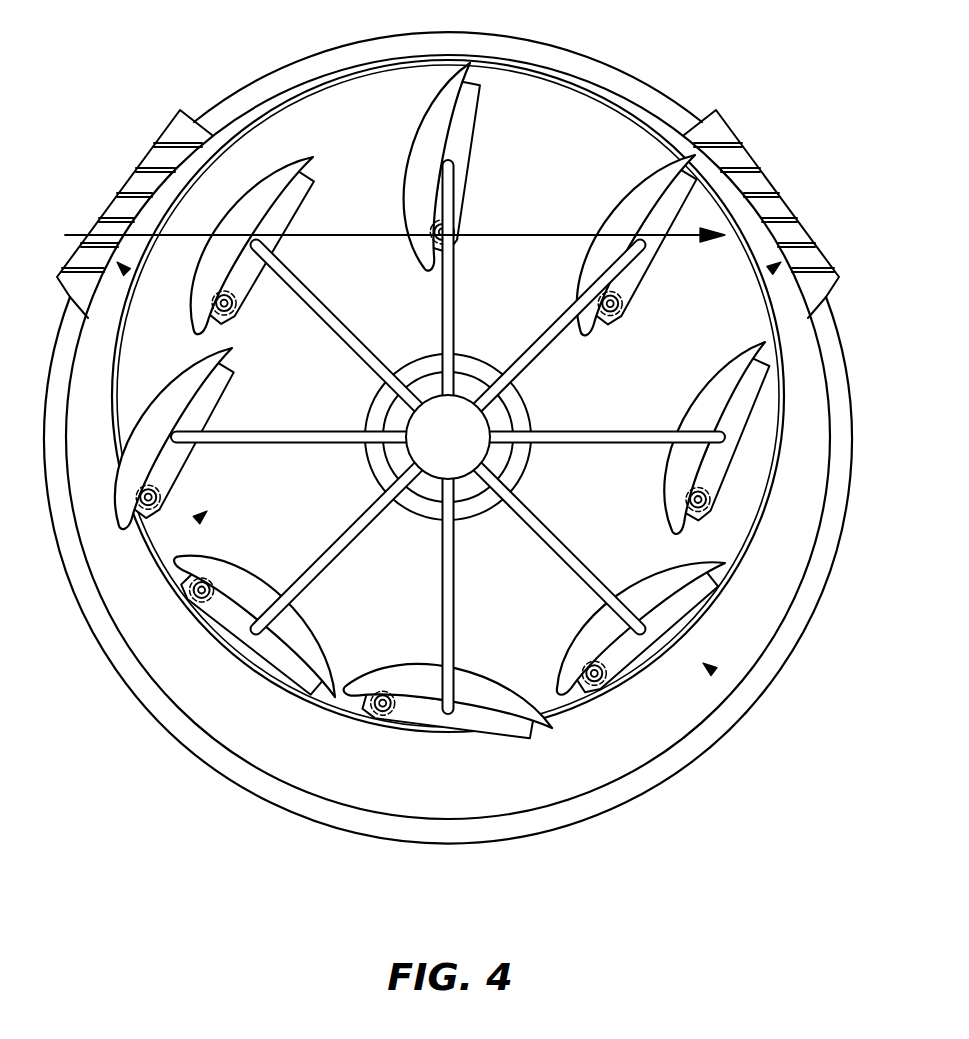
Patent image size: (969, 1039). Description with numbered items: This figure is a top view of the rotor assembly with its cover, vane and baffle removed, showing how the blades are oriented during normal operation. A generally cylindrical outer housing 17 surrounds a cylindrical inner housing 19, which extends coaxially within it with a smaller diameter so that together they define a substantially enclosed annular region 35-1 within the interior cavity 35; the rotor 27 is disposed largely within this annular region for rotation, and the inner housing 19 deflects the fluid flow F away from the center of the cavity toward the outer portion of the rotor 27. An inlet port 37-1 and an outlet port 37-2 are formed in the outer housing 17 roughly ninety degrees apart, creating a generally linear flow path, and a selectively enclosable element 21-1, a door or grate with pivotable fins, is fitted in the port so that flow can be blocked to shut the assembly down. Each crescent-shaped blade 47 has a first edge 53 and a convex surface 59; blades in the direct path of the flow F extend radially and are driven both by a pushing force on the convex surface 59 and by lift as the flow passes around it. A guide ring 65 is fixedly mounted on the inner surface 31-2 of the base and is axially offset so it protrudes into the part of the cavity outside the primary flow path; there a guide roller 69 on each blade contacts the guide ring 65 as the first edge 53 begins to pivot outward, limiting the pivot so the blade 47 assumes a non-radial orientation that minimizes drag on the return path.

The outer housing 17 is at (648, 782).
The inner surface of base 31-2 is at (690, 722).
The guide ring 65 is at (632, 108).
The selectively enclosable element 21-1 is at (181, 108).
The blade 47 is at (420, 132).
The first edge 53 is at (595, 330).
The rotor 27 is at (494, 110).
The convex surface 59 is at (400, 183).
The guide roller 69 is at (622, 310).
The inner housing 19 is at (378, 466).
The fluid flow F is at (565, 225).
The inlet port 37-1 is at (126, 271).
The outlet port 37-2 is at (771, 269).
The interior cavity 35 is at (197, 519).
The annular region 35-1 is at (713, 671).